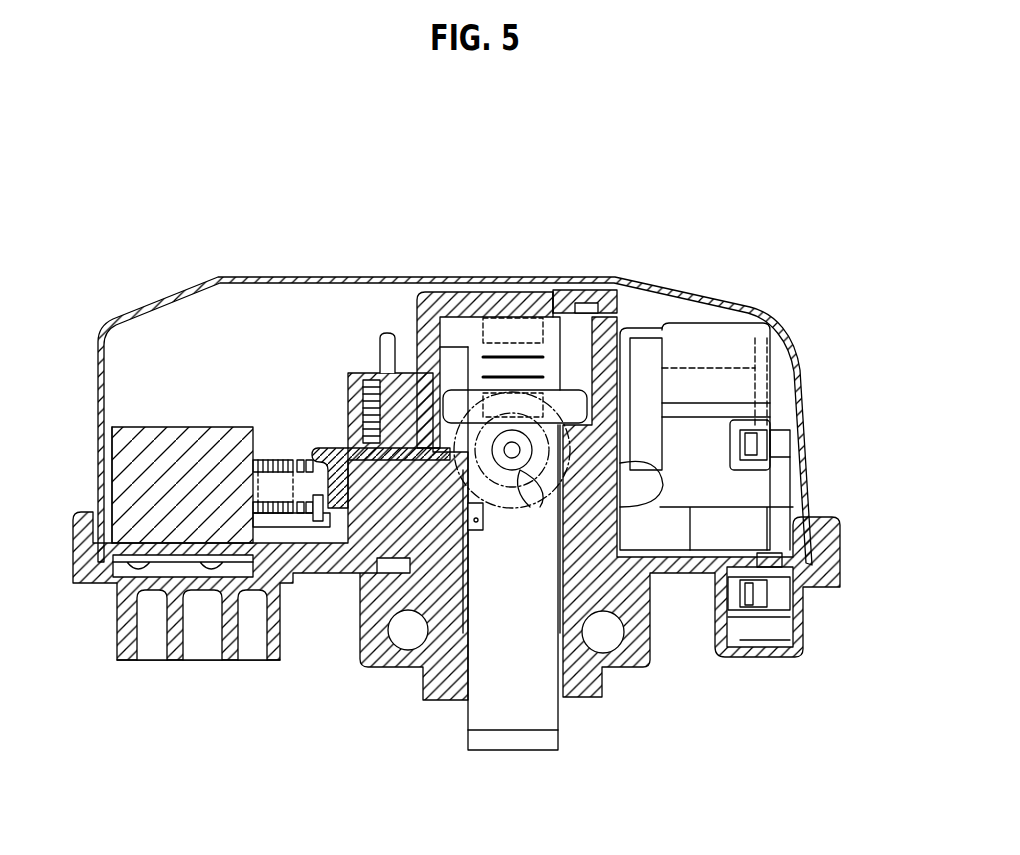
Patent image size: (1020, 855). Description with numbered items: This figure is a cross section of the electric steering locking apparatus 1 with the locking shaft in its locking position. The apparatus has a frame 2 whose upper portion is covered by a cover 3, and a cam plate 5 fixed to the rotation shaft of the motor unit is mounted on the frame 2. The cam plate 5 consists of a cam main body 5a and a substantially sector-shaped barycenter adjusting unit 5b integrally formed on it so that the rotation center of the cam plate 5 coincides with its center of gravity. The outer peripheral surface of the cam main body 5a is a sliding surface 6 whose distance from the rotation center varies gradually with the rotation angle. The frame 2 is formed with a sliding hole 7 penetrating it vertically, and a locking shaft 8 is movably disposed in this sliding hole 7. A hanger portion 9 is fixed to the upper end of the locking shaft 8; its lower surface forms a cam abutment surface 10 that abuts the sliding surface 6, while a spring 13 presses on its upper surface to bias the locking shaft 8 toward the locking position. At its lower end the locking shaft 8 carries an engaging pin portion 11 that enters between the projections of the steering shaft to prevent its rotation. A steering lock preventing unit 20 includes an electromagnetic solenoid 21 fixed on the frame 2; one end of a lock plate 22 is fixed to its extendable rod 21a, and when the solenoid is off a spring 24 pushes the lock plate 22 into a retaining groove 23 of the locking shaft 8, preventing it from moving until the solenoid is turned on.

The electric steering locking apparatus 1 is at (132, 270).
The frame 2 is at (650, 625).
The cover 3 is at (722, 300).
The cam plate 5 is at (756, 481).
The cam main body 5a is at (600, 500).
The barycenter adjusting unit 5b is at (600, 428).
The sliding surface 6 is at (515, 258).
The sliding hole 7 is at (427, 668).
The locking shaft 8 is at (543, 712).
The hanger portion 9 is at (437, 300).
The cam abutment surface 10 is at (592, 300).
The engaging pin portion 11 is at (530, 740).
The spring 13 is at (556, 300).
The steering lock preventing unit 20 is at (196, 428).
The electromagnetic solenoid 21 is at (112, 446).
The extendable rod 21a is at (270, 460).
The lock plate 22 is at (341, 447).
The retaining groove 23 is at (470, 530).
The spring 24 is at (300, 505).